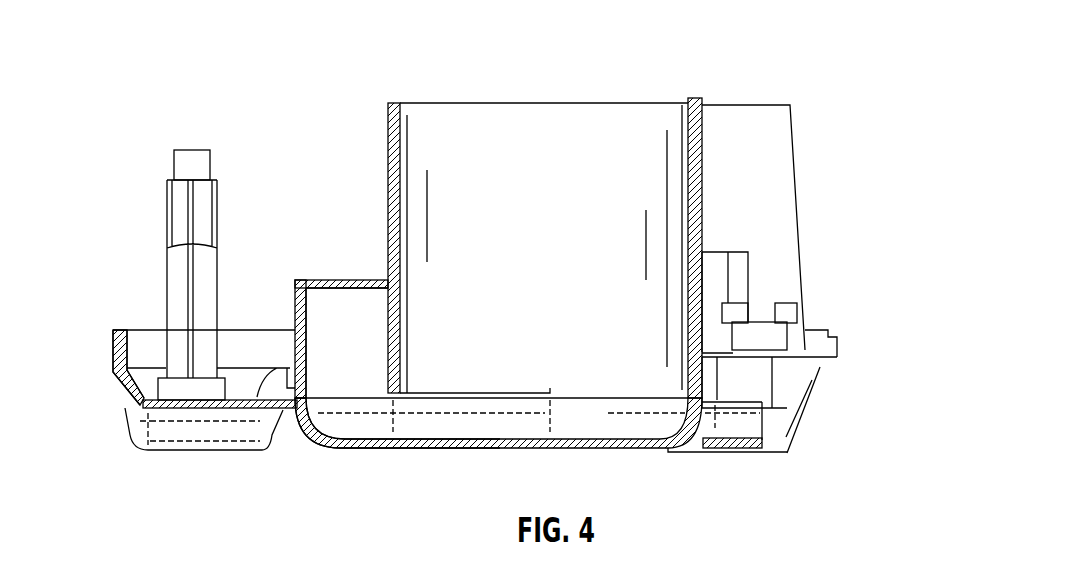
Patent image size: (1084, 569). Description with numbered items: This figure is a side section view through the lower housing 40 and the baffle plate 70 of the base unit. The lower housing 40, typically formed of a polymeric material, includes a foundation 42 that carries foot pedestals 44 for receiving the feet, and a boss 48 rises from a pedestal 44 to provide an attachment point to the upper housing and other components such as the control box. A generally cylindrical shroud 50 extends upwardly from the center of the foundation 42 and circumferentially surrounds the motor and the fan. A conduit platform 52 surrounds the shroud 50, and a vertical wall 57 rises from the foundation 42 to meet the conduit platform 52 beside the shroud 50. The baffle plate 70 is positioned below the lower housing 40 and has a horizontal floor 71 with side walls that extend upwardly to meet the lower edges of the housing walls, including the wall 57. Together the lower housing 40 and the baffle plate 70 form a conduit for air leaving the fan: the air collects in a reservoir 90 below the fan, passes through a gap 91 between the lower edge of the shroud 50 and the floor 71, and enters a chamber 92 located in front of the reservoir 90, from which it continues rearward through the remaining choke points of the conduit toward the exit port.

The lower housing 40 is at (838, 254).
The foundation 42 is at (253, 408).
The foot pedestals 44 is at (181, 452).
The bosses 48 is at (196, 167).
The shroud 50 is at (693, 187).
The conduit platform 52 is at (345, 281).
The vertical wall 57 is at (300, 310).
The baffle plate 70 is at (541, 469).
The horizontal floor 71 is at (418, 448).
The reservoir 90 is at (597, 433).
The gap 91 is at (372, 425).
The chamber 92 is at (316, 310).